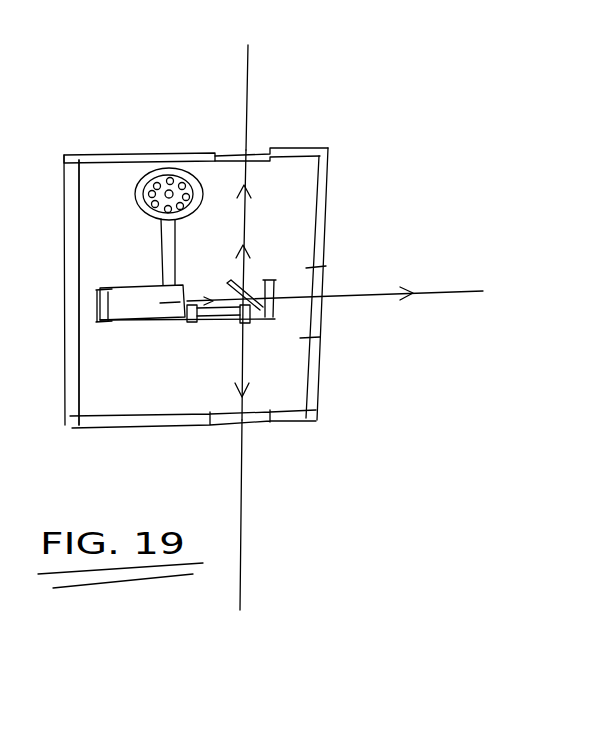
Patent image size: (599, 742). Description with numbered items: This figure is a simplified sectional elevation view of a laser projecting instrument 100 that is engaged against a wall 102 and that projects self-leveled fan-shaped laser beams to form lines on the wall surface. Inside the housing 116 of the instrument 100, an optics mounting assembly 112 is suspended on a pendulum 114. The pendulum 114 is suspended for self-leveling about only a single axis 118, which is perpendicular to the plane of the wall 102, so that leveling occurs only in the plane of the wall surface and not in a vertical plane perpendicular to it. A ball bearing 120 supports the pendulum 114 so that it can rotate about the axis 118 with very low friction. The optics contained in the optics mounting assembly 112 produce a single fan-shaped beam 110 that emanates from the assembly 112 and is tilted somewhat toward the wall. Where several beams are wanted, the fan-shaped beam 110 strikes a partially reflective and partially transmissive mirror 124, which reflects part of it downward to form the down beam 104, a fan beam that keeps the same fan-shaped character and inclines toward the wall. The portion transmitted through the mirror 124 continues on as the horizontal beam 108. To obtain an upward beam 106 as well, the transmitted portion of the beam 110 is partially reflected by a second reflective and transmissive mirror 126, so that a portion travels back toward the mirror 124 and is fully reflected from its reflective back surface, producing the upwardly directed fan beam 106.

The laser projecting instrument 100 is at (106, 150).
The wall 102 is at (487, 80).
The down beam 104 is at (243, 530).
The upward beam 106 is at (252, 84).
The horizontal beam 108 is at (385, 295).
The fan-shaped beam 110 is at (188, 320).
The optics mounting assembly 112 is at (130, 320).
The pendulum 114 is at (155, 248).
The housing 116 is at (327, 193).
The axis 118 is at (176, 180).
The ball bearing 120 is at (158, 182).
The partially reflective/partially transmissive mirror 124 is at (247, 320).
The reflective/transmissive mirror 126 is at (272, 288).